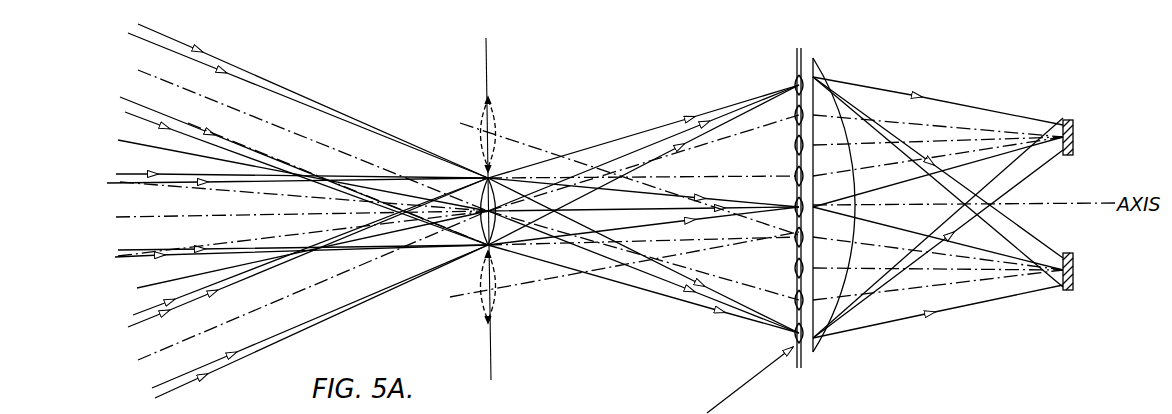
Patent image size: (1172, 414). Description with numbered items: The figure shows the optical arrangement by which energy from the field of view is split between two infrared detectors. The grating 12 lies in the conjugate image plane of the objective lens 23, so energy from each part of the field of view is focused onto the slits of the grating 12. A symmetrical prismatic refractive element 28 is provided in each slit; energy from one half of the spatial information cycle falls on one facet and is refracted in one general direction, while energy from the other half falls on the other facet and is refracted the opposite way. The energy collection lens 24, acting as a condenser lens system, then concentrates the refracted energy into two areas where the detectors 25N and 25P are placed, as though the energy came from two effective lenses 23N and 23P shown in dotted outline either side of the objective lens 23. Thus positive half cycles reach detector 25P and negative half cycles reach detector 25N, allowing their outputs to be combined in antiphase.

The grating 12 is at (804, 354).
The objective lens 23 is at (466, 254).
The effective lens 23N is at (479, 127).
The effective lens 23P is at (496, 291).
The energy collection lens 24 is at (825, 307).
The detector 25P is at (1074, 137).
The detector 25N is at (1074, 270).
The symmetrical prismatic refractive element 28 is at (793, 342).